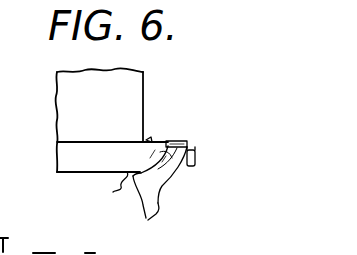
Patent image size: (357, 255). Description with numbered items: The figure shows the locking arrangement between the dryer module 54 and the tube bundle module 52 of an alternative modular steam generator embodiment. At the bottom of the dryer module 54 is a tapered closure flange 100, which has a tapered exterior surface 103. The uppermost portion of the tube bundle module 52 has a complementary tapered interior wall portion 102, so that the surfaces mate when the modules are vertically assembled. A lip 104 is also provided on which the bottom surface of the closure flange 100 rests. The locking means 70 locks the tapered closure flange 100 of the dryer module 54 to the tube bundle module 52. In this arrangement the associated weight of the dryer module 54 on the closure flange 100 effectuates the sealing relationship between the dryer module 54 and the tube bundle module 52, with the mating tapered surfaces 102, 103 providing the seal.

The dryer module 54 is at (145, 90).
The tapered closure flange 100 is at (150, 139).
The tapered exterior surface 103 is at (187, 144).
The locking means 70 is at (196, 158).
The tapered interior wall portion 102 is at (164, 181).
The lip 104 is at (103, 188).
The tube bundle module 52 is at (147, 220).